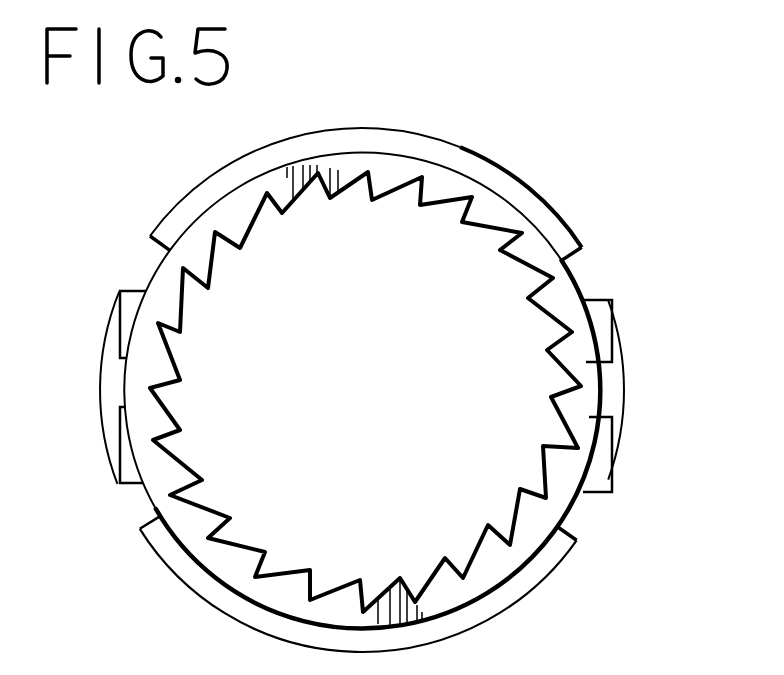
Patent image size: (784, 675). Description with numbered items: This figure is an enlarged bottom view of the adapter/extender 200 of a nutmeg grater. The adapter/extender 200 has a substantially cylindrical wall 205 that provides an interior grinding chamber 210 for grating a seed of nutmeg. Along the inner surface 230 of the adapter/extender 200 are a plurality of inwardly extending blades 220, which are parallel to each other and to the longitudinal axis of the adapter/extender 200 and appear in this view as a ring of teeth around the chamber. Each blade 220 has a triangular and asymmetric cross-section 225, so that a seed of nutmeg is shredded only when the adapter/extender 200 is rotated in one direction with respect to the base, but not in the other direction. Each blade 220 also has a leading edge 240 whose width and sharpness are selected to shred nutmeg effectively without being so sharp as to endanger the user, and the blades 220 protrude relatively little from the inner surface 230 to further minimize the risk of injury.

The adapter/extender 200 is at (551, 236).
The cylindrical wall 205 is at (197, 211).
The interior grinding chamber 210 is at (468, 260).
The inwardly extending blades 220 is at (562, 364).
The triangular and asymmetric cross-section 225 is at (566, 418).
The inner surface 230 is at (442, 181).
The leading edge 240 is at (552, 479).